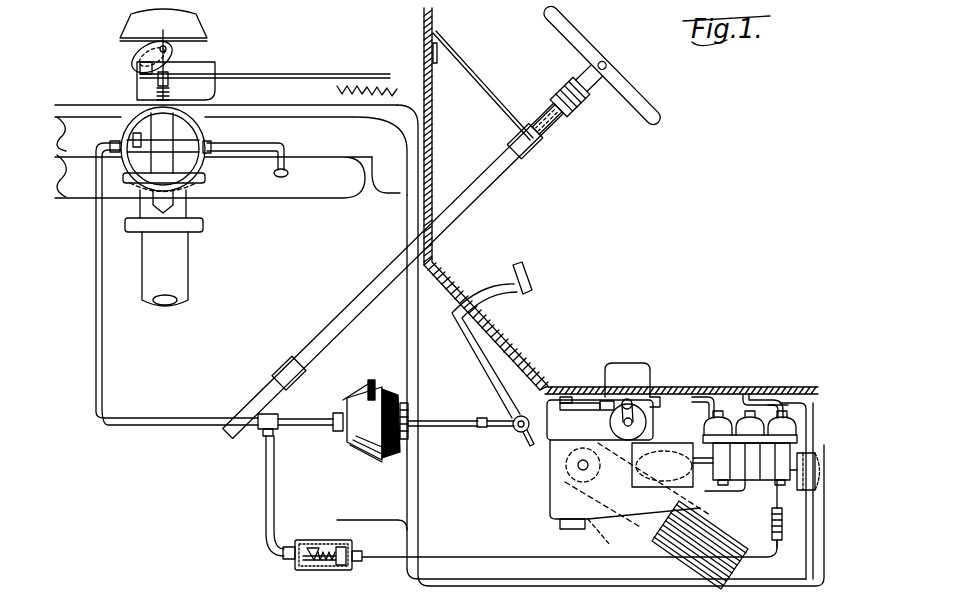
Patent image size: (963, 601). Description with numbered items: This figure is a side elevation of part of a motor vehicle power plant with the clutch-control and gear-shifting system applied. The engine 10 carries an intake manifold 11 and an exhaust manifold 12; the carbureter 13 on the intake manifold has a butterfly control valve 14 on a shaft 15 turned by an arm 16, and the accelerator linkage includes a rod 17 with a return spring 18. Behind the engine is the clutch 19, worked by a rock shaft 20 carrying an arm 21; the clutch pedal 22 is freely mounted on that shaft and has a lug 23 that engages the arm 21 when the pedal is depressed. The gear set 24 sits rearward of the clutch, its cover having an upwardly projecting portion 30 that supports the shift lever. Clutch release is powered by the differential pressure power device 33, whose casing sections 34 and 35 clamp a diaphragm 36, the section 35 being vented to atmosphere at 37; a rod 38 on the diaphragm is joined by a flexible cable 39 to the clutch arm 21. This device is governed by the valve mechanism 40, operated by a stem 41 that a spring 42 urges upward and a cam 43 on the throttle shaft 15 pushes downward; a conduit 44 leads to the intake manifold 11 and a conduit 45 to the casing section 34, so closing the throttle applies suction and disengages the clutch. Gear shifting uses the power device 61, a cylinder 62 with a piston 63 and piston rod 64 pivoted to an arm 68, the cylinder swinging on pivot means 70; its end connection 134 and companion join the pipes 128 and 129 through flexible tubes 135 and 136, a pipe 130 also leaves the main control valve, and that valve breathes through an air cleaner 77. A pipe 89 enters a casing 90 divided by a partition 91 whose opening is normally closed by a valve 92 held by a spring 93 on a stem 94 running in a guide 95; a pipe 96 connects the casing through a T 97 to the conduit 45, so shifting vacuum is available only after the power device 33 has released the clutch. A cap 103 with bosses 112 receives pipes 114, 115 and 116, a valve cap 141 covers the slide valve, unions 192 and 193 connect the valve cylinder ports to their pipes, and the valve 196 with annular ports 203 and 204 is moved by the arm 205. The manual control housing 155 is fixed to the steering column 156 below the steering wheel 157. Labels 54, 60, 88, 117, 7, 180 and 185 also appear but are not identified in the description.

The motor vehicle engine 10 is at (557, 308).
The intake manifold 11 is at (213, 177).
The exhaust manifold 12 is at (231, 151).
The carbureter 13 is at (213, 62).
The butterfly control valve 14 is at (176, 36).
The shaft 15 is at (165, 46).
The arm 16 is at (140, 65).
The rod 17 is at (380, 73).
The return spring 18 is at (337, 86).
The clutch 19 is at (510, 553).
The rock shaft 20 is at (524, 446).
The arm 21 is at (512, 436).
The clutch pedal 22 is at (490, 286).
The lug 23 is at (544, 397).
The gear set 24 is at (645, 520).
The upwardly projecting portion 30 is at (650, 368).
The differential pressure power device 33 is at (362, 455).
The casing section 34 is at (353, 441).
The casing section 35 is at (370, 382).
The diaphragm 36 is at (394, 388).
The vent 37 is at (406, 404).
The rod 38 is at (425, 430).
The cable or flexible element 39 is at (478, 420).
The valve mechanism 40 is at (191, 162).
The stem 41 is at (158, 80).
The spring 42 is at (157, 93).
The cam 43 is at (138, 52).
The conduit 44 is at (268, 143).
The conduit 45 is at (103, 335).
The crank housing 54 is at (610, 421).
The belt 60 is at (599, 518).
The power device 61 is at (711, 596).
The cylinder 62 is at (679, 596).
The piston 63 is at (727, 532).
The piston rod 64 is at (572, 510).
The arm 68 is at (637, 485).
The pivot means 70 is at (749, 596).
The air cleaner 77 is at (797, 475).
The housing 88 is at (662, 460).
The pipe 89 is at (380, 553).
The casing 90 is at (352, 567).
The partition 91 is at (341, 548).
The valve 92 is at (323, 547).
The spring 93 is at (313, 546).
The stem 94 is at (290, 557).
The guide 95 is at (322, 567).
The pipe 96 is at (266, 493).
The T 97 is at (277, 417).
The cap 103 is at (793, 403).
The boss 112 is at (702, 399).
The pipe 114 is at (766, 410).
The pipe 115 is at (731, 408).
The pipe 116 is at (760, 400).
The pipe 117 is at (742, 410).
The pipe 128 is at (769, 486).
The pipe 129 is at (687, 472).
The pipe 130 is at (745, 489).
The pipe connection 134 is at (590, 465).
The flexible tube 135 is at (752, 558).
The flexible tube 136 is at (663, 466).
The valve cap 141 is at (574, 402).
The housing 155 is at (586, 106).
The steering column 156 is at (504, 163).
The steering wheel 157 is at (645, 101).
The union 192 is at (604, 398).
The union 193 is at (653, 395).
The arm 205 is at (628, 399).
The part 7 is at (72, 593).
The valve 196 is at (175, 596).
The annular port 204 is at (215, 596).
The part 180 is at (292, 596).
The annular port 203 is at (340, 596).
The part 185 is at (390, 596).